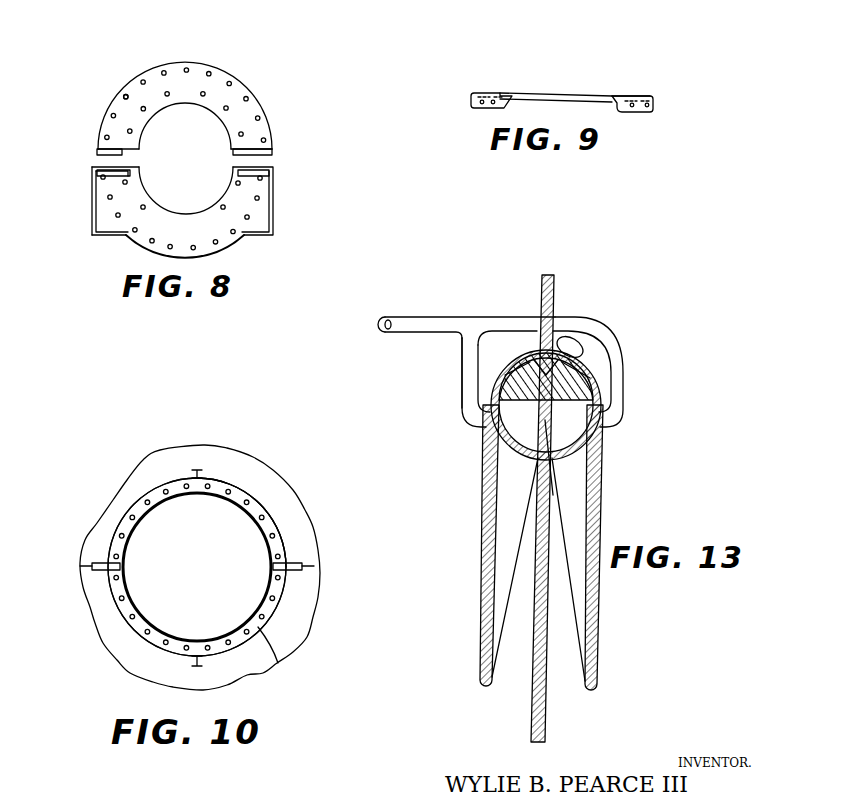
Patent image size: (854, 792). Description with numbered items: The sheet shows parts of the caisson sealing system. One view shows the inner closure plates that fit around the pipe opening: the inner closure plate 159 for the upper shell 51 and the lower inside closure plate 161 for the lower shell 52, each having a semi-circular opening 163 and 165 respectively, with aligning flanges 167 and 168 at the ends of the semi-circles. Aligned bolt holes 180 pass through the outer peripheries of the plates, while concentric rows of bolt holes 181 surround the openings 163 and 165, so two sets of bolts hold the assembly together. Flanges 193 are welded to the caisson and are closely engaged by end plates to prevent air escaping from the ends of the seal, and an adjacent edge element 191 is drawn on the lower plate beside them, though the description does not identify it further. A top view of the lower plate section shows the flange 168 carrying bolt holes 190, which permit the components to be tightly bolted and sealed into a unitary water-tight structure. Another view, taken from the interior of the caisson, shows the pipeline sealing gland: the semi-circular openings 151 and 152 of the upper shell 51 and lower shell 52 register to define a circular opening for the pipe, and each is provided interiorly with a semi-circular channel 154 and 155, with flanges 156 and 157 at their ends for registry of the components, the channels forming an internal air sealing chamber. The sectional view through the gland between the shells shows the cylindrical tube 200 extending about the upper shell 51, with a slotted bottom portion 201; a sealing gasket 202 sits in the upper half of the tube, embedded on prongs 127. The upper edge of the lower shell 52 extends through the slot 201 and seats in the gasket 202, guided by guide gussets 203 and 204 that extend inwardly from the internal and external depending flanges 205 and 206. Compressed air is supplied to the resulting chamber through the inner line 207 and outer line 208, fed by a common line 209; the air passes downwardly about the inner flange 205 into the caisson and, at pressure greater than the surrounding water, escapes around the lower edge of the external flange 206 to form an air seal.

In FIG. 10, the upper shell 51 is at (288, 483).
In FIG. 13, the upper shell 51 is at (556, 286).
In FIG. 10, the lower shell 52 is at (296, 633).
In FIG. 13, the lower shell 52 is at (553, 495).
In FIG. 13, the pins 127 is at (523, 360).
In FIG. 10, the semi-circular opening 151 is at (246, 522).
In FIG. 10, the semi-circular opening 152 is at (258, 600).
In FIG. 10, the semi-circular channel 154 is at (273, 520).
In FIG. 10, the semi-circular channel 155 is at (279, 665).
In FIG. 10, the flange 156 is at (102, 565).
In FIG. 10, the flange 157 is at (95, 573).
In FIG. 8, the inner closure plate 159 is at (128, 92).
In FIG. 8, the lower inside closure plate 161 is at (150, 230).
In FIG. 9, the lower inside closure plate 161 is at (628, 95).
In FIG. 8, the semi-circular opening 163 is at (125, 128).
In FIG. 8, the semi-circular opening 165 is at (140, 187).
In FIG. 9, the semi-circular opening 165 is at (530, 93).
In FIG. 8, the aligning flange 167 is at (100, 140).
In FIG. 8, the aligning flange 168 is at (118, 160).
In FIG. 9, the aligning flange 168 is at (471, 98).
In FIG. 8, the bolt holes 180 is at (220, 73).
In FIG. 8, the bolt holes 181 is at (222, 105).
In FIG. 9, the bolt holes 190 is at (652, 124).
In FIG. 8, the outer frame line 191 is at (108, 223).
In FIG. 8, the flanges 193 is at (98, 193).
In FIG. 13, the cylindrical tubes 200 is at (568, 347).
In FIG. 13, the slotted bottom portion 201 is at (537, 460).
In FIG. 13, the sealing gasket 202 is at (568, 370).
In FIG. 13, the guide gusset 203 is at (503, 493).
In FIG. 13, the guide gusset 204 is at (582, 497).
In FIG. 13, the internal depending flange 205 is at (483, 557).
In FIG. 13, the external depending flange 206 is at (603, 517).
In FIG. 13, the inner line 207 is at (460, 413).
In FIG. 13, the outer line 208 is at (624, 398).
In FIG. 13, the common line 209 is at (448, 317).